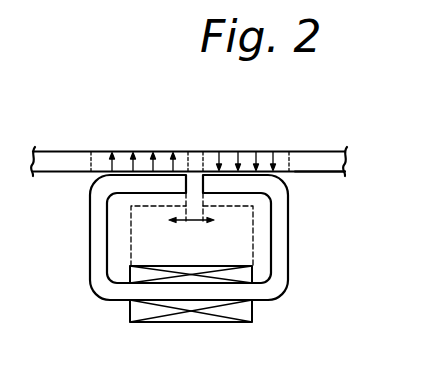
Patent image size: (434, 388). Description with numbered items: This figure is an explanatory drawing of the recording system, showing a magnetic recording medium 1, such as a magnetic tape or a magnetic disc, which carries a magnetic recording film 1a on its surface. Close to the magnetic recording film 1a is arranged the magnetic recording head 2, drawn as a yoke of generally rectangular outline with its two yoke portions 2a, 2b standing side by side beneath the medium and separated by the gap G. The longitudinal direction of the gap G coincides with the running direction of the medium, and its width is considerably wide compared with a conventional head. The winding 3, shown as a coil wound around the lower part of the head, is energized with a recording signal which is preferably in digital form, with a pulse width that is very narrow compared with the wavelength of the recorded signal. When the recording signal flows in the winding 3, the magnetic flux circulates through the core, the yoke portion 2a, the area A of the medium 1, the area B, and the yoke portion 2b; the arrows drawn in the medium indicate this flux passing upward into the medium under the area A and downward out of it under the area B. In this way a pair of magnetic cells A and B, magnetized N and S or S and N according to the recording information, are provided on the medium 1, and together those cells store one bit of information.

The magnetic recording medium 1 is at (338, 137).
The magnetic recording film 1a is at (335, 163).
The magnetic recording head 2 is at (287, 285).
The yoke 2a is at (153, 185).
The yoke 2b is at (235, 185).
The winding 3 is at (197, 322).
The magnetic cell A is at (125, 150).
The magnetic cell B is at (267, 150).
The gap G is at (193, 221).